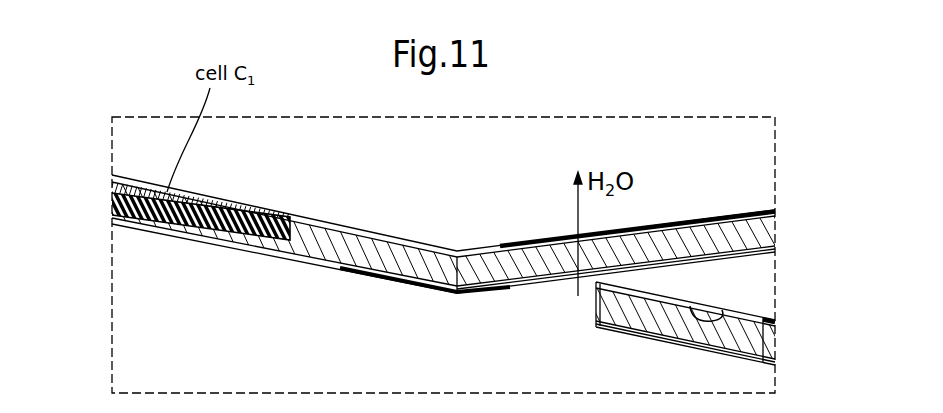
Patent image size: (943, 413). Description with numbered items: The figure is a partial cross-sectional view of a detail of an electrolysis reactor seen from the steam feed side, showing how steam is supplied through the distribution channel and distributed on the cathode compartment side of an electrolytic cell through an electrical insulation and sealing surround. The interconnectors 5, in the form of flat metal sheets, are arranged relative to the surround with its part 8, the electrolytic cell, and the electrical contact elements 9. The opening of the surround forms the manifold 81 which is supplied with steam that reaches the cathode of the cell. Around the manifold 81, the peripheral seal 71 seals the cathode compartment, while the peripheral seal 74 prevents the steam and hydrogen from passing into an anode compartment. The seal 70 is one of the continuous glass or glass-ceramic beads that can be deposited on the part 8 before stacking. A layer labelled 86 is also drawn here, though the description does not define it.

The interconnector 5 is at (315, 263).
The part of the electrical insulation and sealing surround 8 is at (432, 278).
The electrical contact element 9 is at (137, 183).
The seal 70 is at (238, 238).
The peripheral seal 71 is at (747, 313).
The peripheral seal 74 is at (373, 275).
The manifold 81 is at (558, 308).
The top layer 86 is at (527, 268).